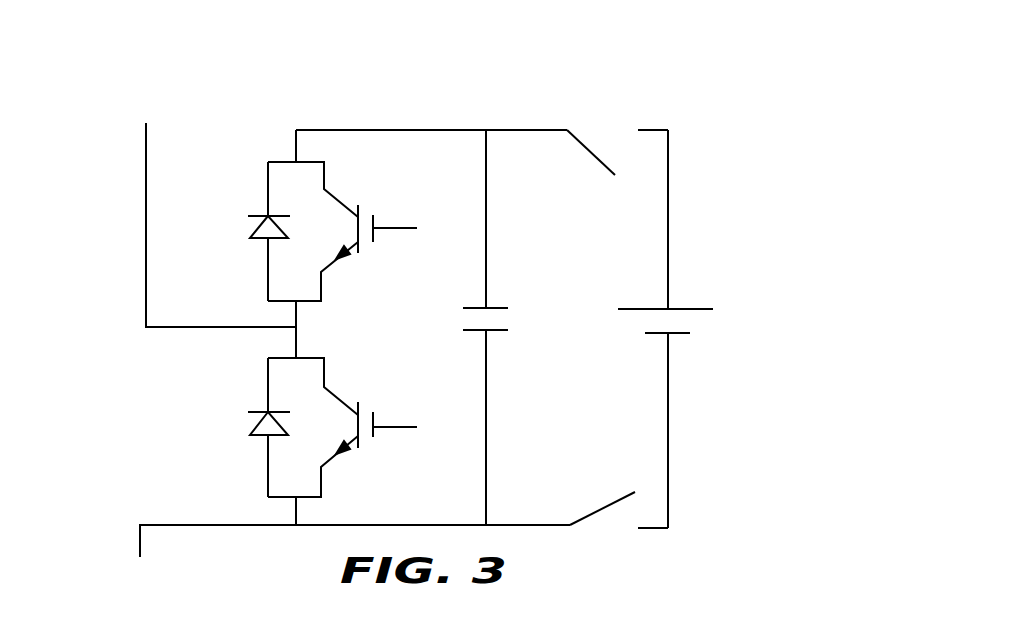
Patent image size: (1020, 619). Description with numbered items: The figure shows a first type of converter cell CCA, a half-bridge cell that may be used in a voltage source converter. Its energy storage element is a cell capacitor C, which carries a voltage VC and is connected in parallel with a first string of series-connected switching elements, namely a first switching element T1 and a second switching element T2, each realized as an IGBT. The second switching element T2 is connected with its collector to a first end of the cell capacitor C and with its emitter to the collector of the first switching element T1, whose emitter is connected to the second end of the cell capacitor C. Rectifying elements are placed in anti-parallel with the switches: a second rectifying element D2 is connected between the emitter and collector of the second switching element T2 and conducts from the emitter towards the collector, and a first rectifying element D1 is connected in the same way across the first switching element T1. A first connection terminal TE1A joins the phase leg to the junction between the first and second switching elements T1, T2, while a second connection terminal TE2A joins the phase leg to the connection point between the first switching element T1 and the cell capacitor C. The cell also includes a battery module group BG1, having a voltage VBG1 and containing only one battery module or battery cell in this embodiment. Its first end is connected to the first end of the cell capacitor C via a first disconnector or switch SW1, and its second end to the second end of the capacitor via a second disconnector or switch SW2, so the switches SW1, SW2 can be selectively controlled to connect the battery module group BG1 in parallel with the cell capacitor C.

The first connection terminal TE1A is at (169, 209).
The second connection terminal TE2A is at (306, 551).
The first switching element T1 is at (342, 427).
The second switching element T2 is at (342, 231).
The first rectifying element D1 is at (238, 427).
The second rectifying element D2 is at (247, 231).
The cell capacitor C is at (500, 327).
The voltage of the cell capacitor VC is at (438, 321).
The first disconnector or switch SW1 is at (610, 131).
The second disconnector or switch SW2 is at (615, 528).
The battery module group BG1 is at (700, 329).
The voltage of the battery module group VBG1 is at (602, 328).
The converter cell CCA is at (548, 62).